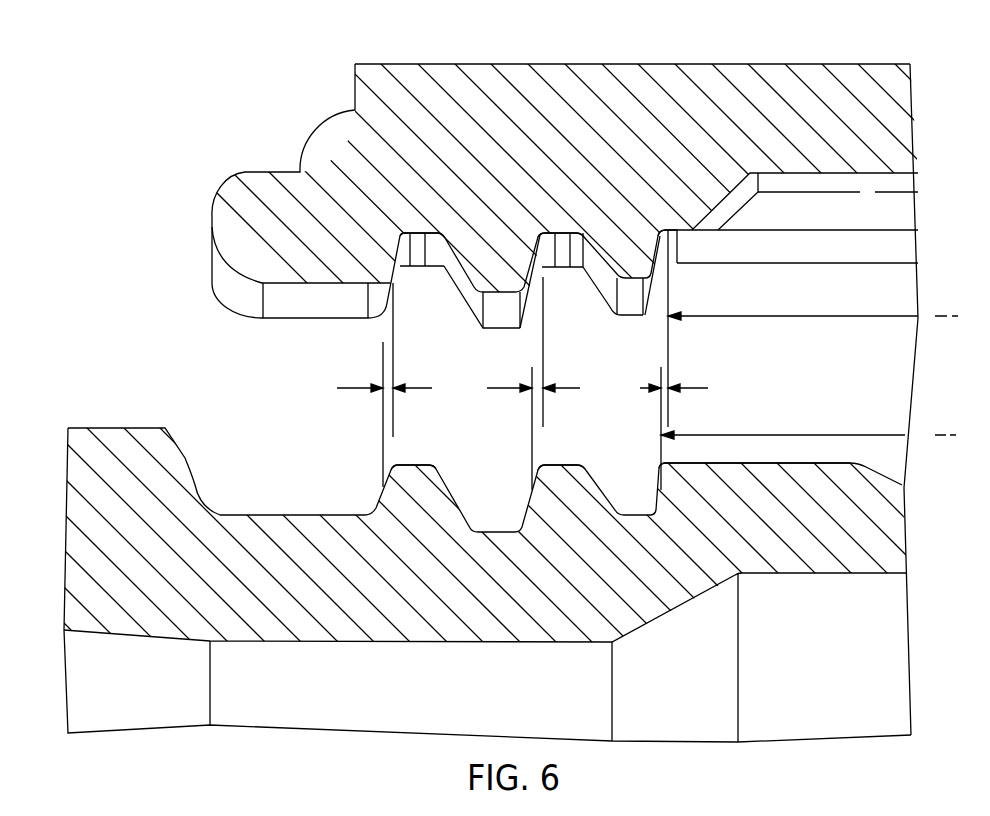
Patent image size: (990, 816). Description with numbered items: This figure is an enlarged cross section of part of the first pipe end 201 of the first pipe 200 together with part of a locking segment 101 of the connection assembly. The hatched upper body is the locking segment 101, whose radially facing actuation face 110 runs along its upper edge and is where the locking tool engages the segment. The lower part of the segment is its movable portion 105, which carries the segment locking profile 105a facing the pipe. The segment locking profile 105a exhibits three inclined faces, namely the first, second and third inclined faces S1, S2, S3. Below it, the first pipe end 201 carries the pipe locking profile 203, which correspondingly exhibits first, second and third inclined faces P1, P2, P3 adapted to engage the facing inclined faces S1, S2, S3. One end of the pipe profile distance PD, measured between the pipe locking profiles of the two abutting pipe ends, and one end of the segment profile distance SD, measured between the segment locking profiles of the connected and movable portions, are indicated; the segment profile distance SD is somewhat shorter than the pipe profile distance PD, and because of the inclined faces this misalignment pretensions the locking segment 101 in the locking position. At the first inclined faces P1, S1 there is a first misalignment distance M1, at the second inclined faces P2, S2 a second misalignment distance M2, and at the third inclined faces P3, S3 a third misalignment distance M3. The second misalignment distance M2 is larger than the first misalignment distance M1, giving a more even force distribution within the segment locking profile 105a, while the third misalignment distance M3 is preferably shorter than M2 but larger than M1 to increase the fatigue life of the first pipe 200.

The locking segment 101 is at (745, 88).
The actuation face 110 is at (545, 63).
The movable portion 105 is at (380, 78).
The segment locking profile 105a is at (312, 340).
The third inclined face S3 is at (391, 277).
The second inclined face S2 is at (541, 278).
The first inclined face S1 is at (665, 270).
The segment profile distance SD is at (813, 303).
The pipe profile distance PD is at (808, 423).
The third misalignment distance M3 is at (388, 385).
The second misalignment distance M2 is at (538, 383).
The first misalignment distance M1 is at (678, 360).
The first pipe 200 is at (140, 627).
The first pipe end 201 is at (467, 628).
The pipe locking profile 203 is at (314, 476).
The third inclined face P3 is at (386, 497).
The second inclined face P2 is at (532, 493).
The first inclined face P1 is at (662, 500).